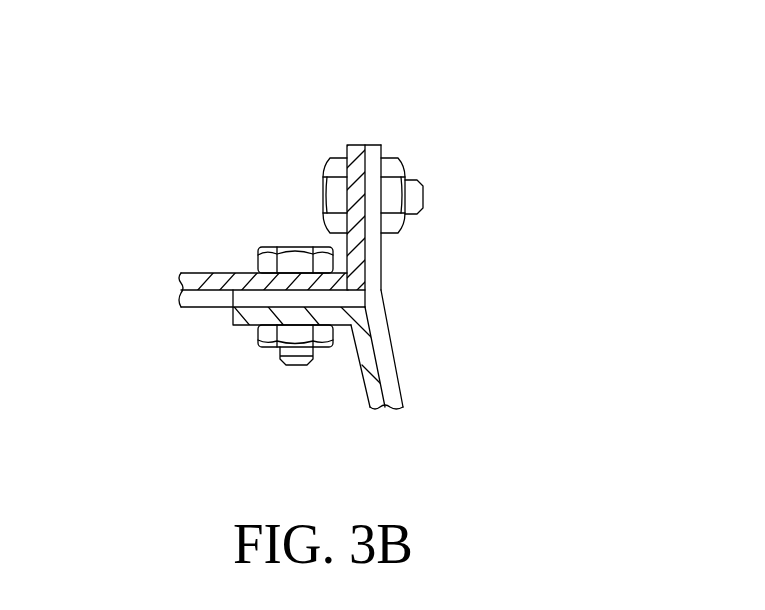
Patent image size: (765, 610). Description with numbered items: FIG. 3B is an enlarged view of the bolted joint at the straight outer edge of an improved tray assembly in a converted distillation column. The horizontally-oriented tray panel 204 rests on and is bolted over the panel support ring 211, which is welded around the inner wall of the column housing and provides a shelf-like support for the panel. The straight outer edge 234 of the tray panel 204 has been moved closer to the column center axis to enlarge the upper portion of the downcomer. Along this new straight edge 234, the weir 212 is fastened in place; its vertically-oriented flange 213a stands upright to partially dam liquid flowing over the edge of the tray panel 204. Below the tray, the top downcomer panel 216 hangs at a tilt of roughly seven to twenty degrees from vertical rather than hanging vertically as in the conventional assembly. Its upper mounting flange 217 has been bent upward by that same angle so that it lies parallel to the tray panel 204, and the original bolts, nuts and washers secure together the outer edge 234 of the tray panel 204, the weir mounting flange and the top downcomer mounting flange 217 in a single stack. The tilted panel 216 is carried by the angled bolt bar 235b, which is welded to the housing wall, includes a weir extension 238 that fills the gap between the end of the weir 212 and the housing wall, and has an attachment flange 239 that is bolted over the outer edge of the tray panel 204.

The weir 212 is at (358, 130).
The vertically-oriented flange 213a is at (352, 193).
The weir extension 238 is at (375, 195).
The tray panel 204 is at (209, 280).
The panel support ring 211 is at (192, 298).
The straight outer edge 234 is at (365, 276).
The attachment flange 239 is at (245, 297).
The upper mounting flange 217 is at (267, 316).
The angled bolt bar 235b is at (388, 368).
The top downcomer panel 216 is at (367, 383).